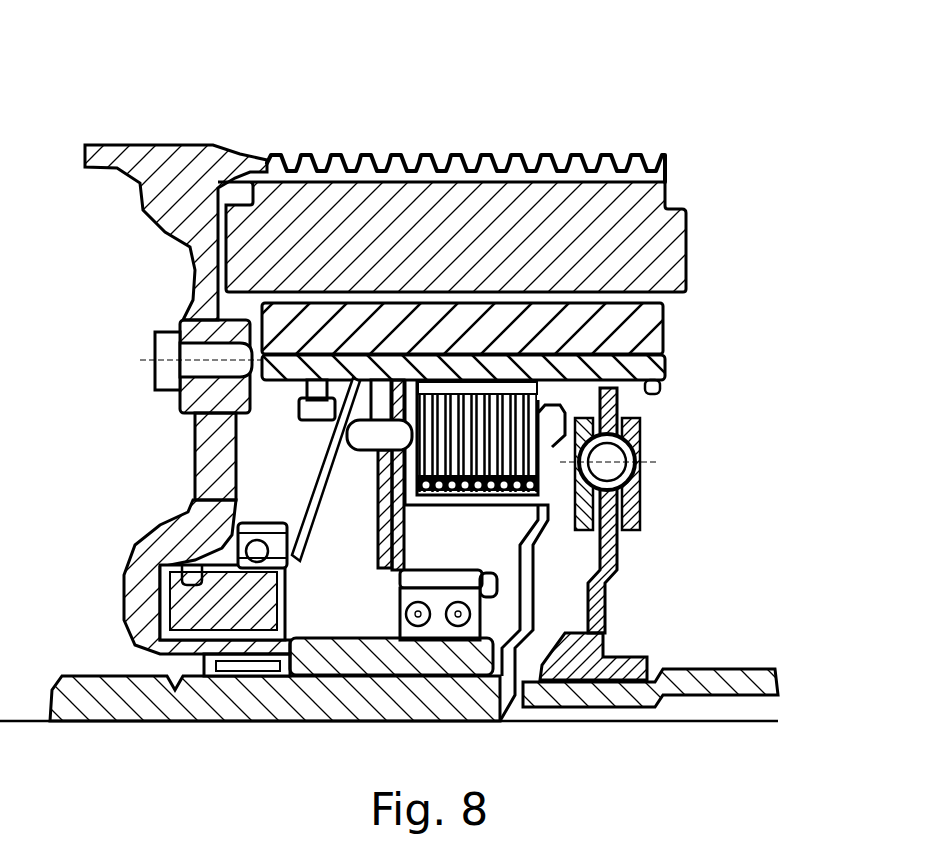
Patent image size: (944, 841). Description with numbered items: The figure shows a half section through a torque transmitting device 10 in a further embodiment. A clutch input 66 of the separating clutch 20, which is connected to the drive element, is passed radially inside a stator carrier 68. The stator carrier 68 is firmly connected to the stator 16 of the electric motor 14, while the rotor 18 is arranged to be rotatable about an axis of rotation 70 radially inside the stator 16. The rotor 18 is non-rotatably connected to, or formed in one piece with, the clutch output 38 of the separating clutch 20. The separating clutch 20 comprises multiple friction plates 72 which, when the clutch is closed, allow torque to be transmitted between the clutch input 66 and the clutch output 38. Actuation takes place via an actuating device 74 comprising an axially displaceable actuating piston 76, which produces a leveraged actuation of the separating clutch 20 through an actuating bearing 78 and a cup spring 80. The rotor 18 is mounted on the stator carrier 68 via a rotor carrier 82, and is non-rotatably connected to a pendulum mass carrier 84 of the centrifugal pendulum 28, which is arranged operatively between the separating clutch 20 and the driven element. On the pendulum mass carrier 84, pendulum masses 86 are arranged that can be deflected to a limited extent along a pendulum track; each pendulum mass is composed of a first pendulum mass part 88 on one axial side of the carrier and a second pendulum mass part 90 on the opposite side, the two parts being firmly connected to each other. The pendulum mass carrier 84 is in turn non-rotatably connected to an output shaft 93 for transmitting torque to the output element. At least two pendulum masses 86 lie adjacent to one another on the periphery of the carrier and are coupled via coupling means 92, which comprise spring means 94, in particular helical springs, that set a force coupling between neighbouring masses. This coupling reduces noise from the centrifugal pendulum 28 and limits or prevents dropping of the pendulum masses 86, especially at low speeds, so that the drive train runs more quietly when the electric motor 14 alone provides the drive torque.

The torque transmitting device 10 is at (445, 188).
The electric motor 14 is at (684, 160).
The stator 16 is at (690, 235).
The rotor 18 is at (655, 322).
The separating clutch 20 is at (400, 455).
The centrifugal pendulum 28 is at (665, 412).
The clutch output 38 is at (518, 378).
The clutch input 66 is at (625, 590).
The stator carrier 68 is at (192, 478).
The axis of rotation 70 is at (760, 721).
The friction plates 72 is at (294, 556).
The actuating device 74 is at (150, 585).
The actuating piston 76 is at (142, 620).
The actuating bearing 78 is at (160, 565).
The cup spring 80 is at (323, 447).
The rotor carrier 82 is at (385, 540).
The pendulum mass carrier 84 is at (625, 525).
The pendulum masses 86 is at (658, 505).
The first pendulum mass part 88 is at (640, 560).
The second pendulum mass part 90 is at (641, 447).
The coupling means 92 is at (641, 463).
The output shaft 93 is at (760, 669).
The spring means 94 is at (640, 540).